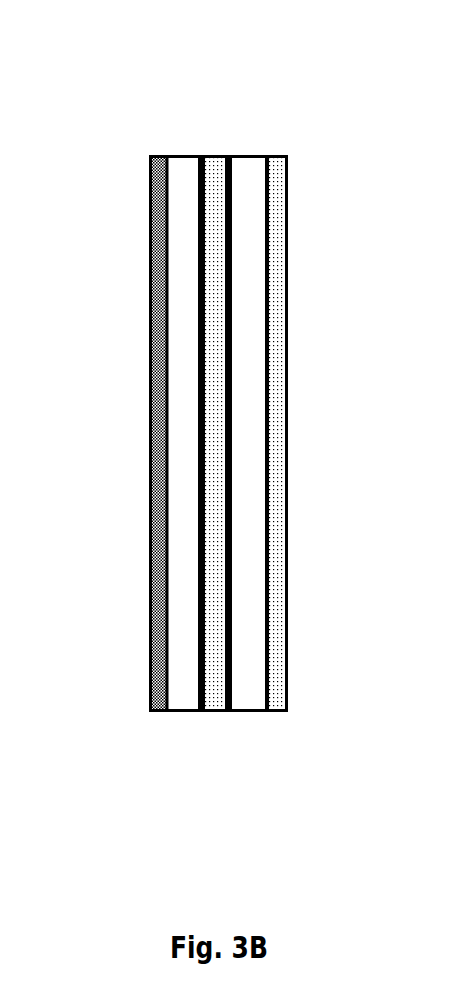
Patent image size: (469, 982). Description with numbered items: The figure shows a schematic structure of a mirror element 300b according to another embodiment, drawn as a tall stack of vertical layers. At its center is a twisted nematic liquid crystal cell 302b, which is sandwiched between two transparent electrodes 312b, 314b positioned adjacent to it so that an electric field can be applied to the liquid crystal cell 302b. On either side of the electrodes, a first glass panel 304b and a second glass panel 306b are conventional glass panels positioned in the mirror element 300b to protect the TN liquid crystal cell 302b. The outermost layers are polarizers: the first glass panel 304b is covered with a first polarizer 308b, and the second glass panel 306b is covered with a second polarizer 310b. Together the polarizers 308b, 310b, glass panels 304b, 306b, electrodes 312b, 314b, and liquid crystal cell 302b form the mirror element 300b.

The mirror element 300b is at (137, 203).
The TN liquid crystal cell 302b is at (215, 700).
The first glass panel 304b is at (187, 700).
The second glass panel 306b is at (253, 705).
The first polarizer 308b is at (160, 540).
The second polarizer 310b is at (285, 712).
The transparent electrode 312b is at (205, 170).
The transparent electrode 314b is at (231, 172).